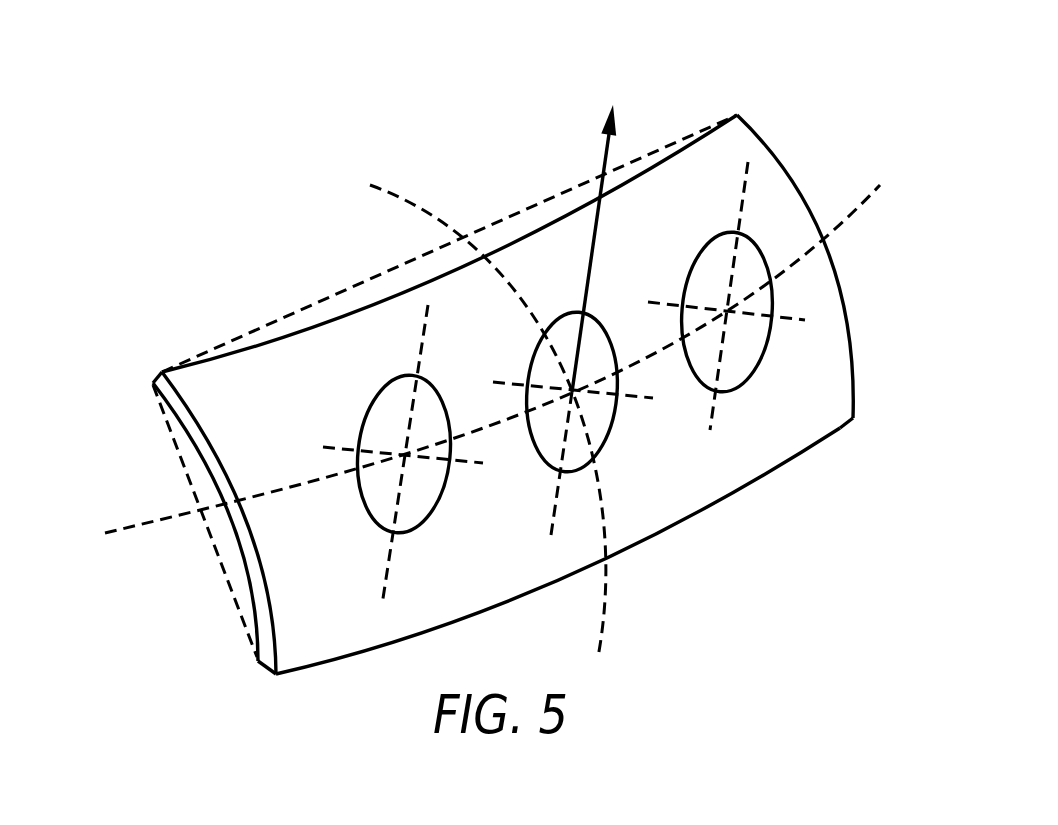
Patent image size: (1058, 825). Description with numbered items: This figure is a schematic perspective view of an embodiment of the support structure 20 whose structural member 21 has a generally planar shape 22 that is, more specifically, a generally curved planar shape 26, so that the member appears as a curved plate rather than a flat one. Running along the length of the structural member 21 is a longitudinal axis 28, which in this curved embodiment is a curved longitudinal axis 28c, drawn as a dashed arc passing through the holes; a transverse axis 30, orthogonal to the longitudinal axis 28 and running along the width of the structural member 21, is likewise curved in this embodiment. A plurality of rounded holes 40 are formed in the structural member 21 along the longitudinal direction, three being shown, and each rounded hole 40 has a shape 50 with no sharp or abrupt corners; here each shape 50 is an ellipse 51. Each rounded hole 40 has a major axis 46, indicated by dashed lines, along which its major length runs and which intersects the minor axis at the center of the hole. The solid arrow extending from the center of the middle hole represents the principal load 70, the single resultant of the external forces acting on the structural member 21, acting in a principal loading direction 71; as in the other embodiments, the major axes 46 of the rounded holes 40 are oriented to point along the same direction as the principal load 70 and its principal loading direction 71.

The support structure 20 is at (193, 222).
The structural member 21 is at (753, 442).
The generally planar shape 22 is at (789, 85).
The generally curved planar shape 26 is at (819, 231).
The longitudinal axis 28 is at (146, 522).
The curved longitudinal axis 28c is at (480, 359).
The transverse axis 30 is at (430, 210).
The rounded holes 40 is at (366, 514).
The major axis 46 is at (415, 355).
The shape 50 is at (180, 313).
The ellipse 51 is at (411, 386).
The principal load 70 is at (603, 158).
The principal loading direction 71 is at (558, 236).